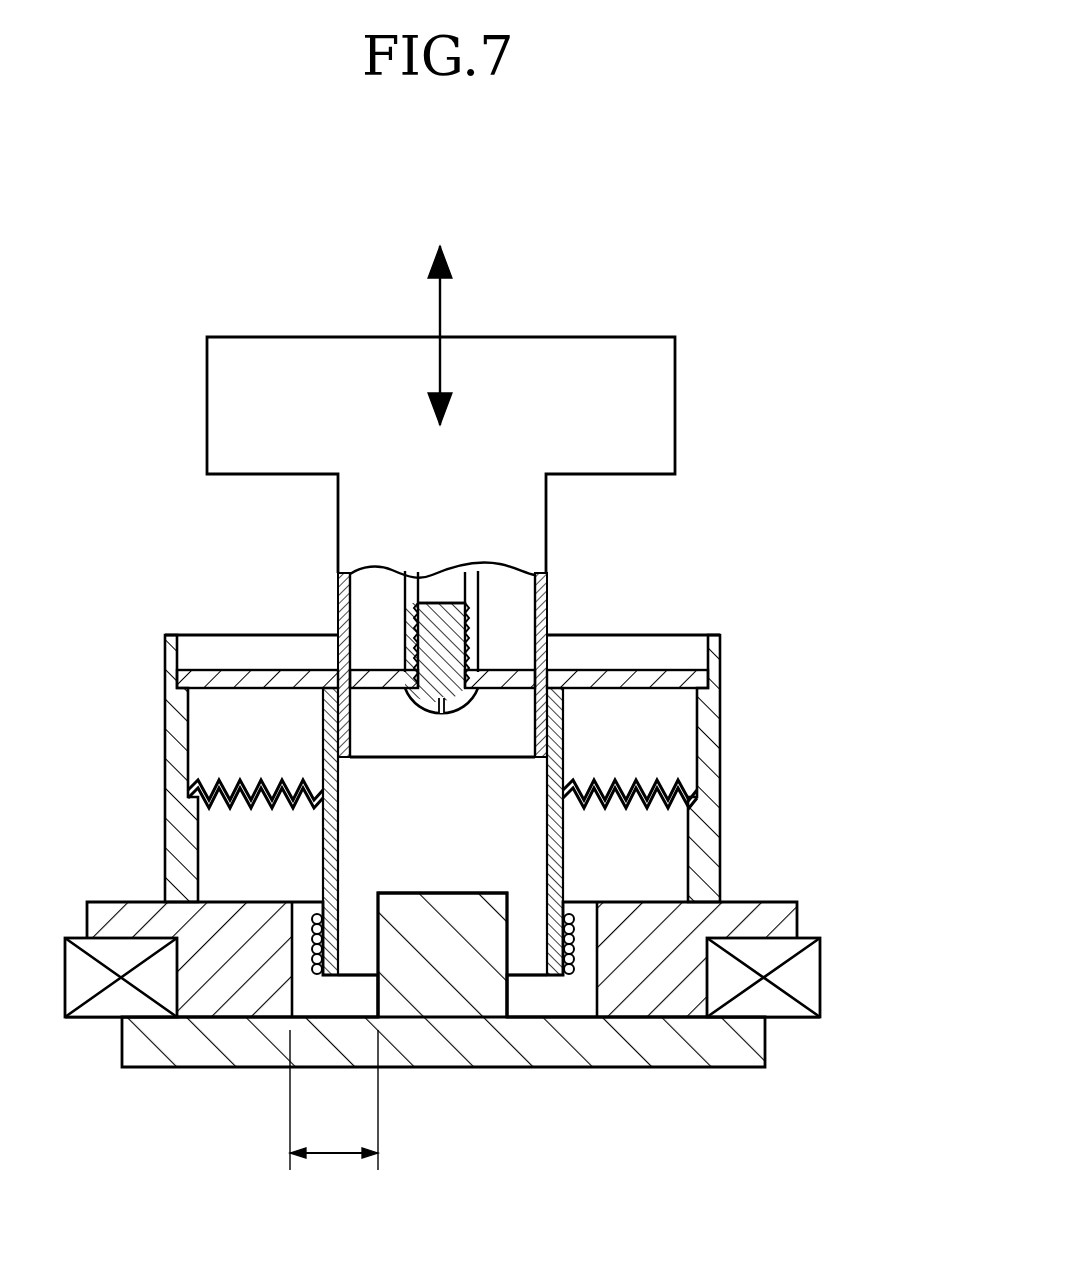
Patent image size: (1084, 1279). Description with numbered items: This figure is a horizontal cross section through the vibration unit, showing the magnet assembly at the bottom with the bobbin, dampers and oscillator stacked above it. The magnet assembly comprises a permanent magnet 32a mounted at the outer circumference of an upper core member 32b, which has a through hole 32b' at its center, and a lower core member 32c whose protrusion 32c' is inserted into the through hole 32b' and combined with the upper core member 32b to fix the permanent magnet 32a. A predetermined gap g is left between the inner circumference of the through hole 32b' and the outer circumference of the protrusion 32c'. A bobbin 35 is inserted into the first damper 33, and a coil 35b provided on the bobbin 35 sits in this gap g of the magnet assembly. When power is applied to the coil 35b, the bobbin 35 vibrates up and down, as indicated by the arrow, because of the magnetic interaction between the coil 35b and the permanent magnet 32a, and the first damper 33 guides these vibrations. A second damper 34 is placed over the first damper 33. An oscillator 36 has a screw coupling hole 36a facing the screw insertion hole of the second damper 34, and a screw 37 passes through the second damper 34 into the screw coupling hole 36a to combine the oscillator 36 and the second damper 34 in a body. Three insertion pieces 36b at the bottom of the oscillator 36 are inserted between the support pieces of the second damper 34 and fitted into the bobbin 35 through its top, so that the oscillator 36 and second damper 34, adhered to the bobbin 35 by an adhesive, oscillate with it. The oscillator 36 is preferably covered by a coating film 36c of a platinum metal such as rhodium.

The oscillator 36 is at (697, 373).
The screw coupling hole 36a is at (437, 593).
The insertion pieces 36b is at (372, 590).
The coating film 36c is at (338, 603).
The screw 37 is at (440, 713).
The second damper 34 is at (640, 670).
The first damper 33 is at (640, 797).
The bobbin 35 is at (323, 840).
The coil 35b is at (305, 946).
The upper core member 32b is at (486, 931).
The through hole 32b' is at (460, 1026).
The permanent magnet 32a is at (820, 975).
The lower core member 32c is at (517, 990).
The protrusion 32c' is at (442, 1022).
The gap g is at (334, 1100).